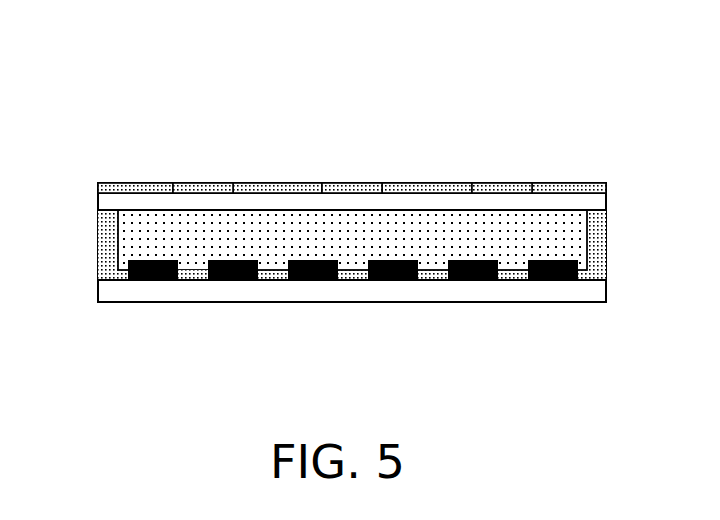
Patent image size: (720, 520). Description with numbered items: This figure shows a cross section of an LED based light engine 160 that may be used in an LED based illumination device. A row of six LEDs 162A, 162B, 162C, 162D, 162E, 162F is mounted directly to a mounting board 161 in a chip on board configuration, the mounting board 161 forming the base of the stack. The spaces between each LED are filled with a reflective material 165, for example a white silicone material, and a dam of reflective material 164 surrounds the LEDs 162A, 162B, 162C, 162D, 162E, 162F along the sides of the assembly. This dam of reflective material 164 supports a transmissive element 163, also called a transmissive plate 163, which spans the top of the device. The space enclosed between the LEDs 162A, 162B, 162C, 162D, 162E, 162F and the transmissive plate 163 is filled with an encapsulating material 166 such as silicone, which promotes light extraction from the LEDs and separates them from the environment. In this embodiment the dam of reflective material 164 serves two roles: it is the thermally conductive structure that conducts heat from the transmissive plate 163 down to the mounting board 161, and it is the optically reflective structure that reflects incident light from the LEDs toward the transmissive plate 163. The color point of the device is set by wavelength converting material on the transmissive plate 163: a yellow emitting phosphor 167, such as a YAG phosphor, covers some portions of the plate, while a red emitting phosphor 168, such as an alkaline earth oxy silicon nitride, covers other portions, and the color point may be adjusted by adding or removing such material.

The LED based light engine 160 is at (583, 93).
The mounting board 161 is at (115, 288).
The LED 162A is at (157, 280).
The LED 162B is at (228, 280).
The LED 162C is at (308, 280).
The LED 162D is at (387, 280).
The LED 162E is at (468, 280).
The LED 162F is at (548, 280).
The transmissive plate 163 is at (110, 204).
The dam of reflective material 164 is at (110, 266).
The reflective material 165 is at (197, 272).
The encapsulating material 166 is at (562, 233).
The yellow emitting phosphor 167 is at (202, 190).
The red emitting phosphor 168 is at (267, 190).